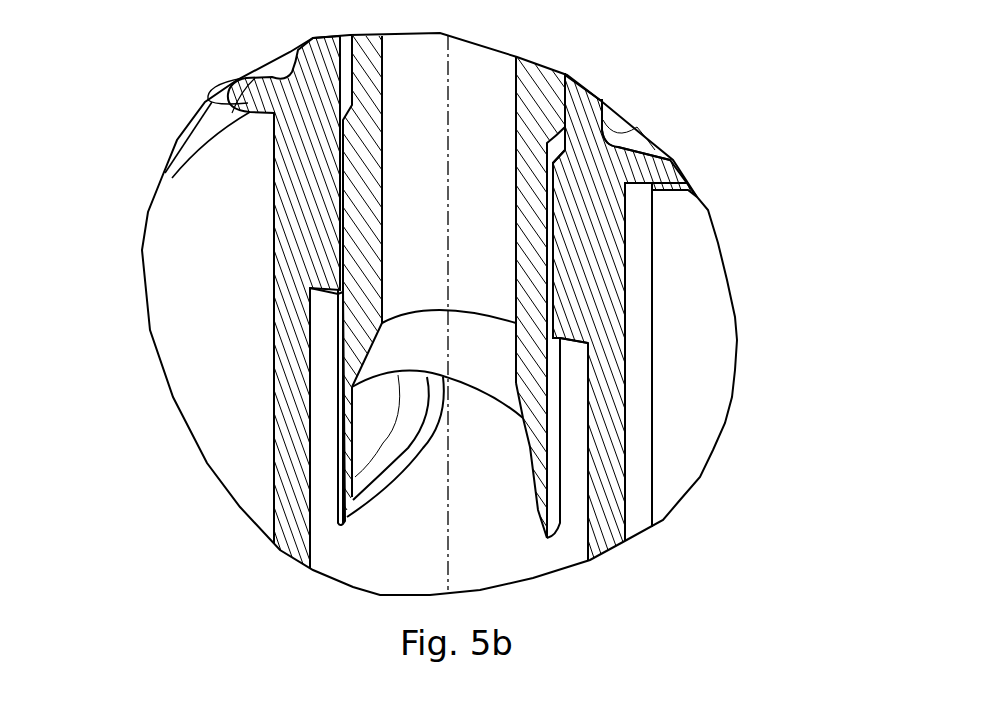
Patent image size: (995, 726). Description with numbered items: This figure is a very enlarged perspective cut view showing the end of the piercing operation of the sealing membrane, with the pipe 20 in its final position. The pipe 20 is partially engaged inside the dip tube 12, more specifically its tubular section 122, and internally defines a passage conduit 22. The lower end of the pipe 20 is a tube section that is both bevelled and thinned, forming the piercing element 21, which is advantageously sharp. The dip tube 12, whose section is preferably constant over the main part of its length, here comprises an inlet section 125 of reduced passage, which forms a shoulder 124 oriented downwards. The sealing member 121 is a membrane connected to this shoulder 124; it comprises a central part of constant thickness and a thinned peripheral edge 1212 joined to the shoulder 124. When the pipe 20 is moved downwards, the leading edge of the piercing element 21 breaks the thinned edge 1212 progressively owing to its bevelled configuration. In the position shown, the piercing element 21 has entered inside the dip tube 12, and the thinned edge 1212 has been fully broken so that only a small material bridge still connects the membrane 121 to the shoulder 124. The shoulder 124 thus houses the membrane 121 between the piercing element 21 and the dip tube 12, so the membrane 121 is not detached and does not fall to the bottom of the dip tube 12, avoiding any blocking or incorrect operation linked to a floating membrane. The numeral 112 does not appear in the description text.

The dip tube 12 is at (603, 498).
The inner wall 112 is at (657, 173).
The sealing member 121 is at (340, 437).
The thinned peripheral edge 1212 is at (340, 297).
The tubular section 122 is at (585, 110).
The shoulder 124 is at (305, 265).
The inlet section 125 is at (553, 228).
The pipe 20 is at (527, 272).
The piercing element 21 is at (537, 442).
The passage conduit 22 is at (473, 137).